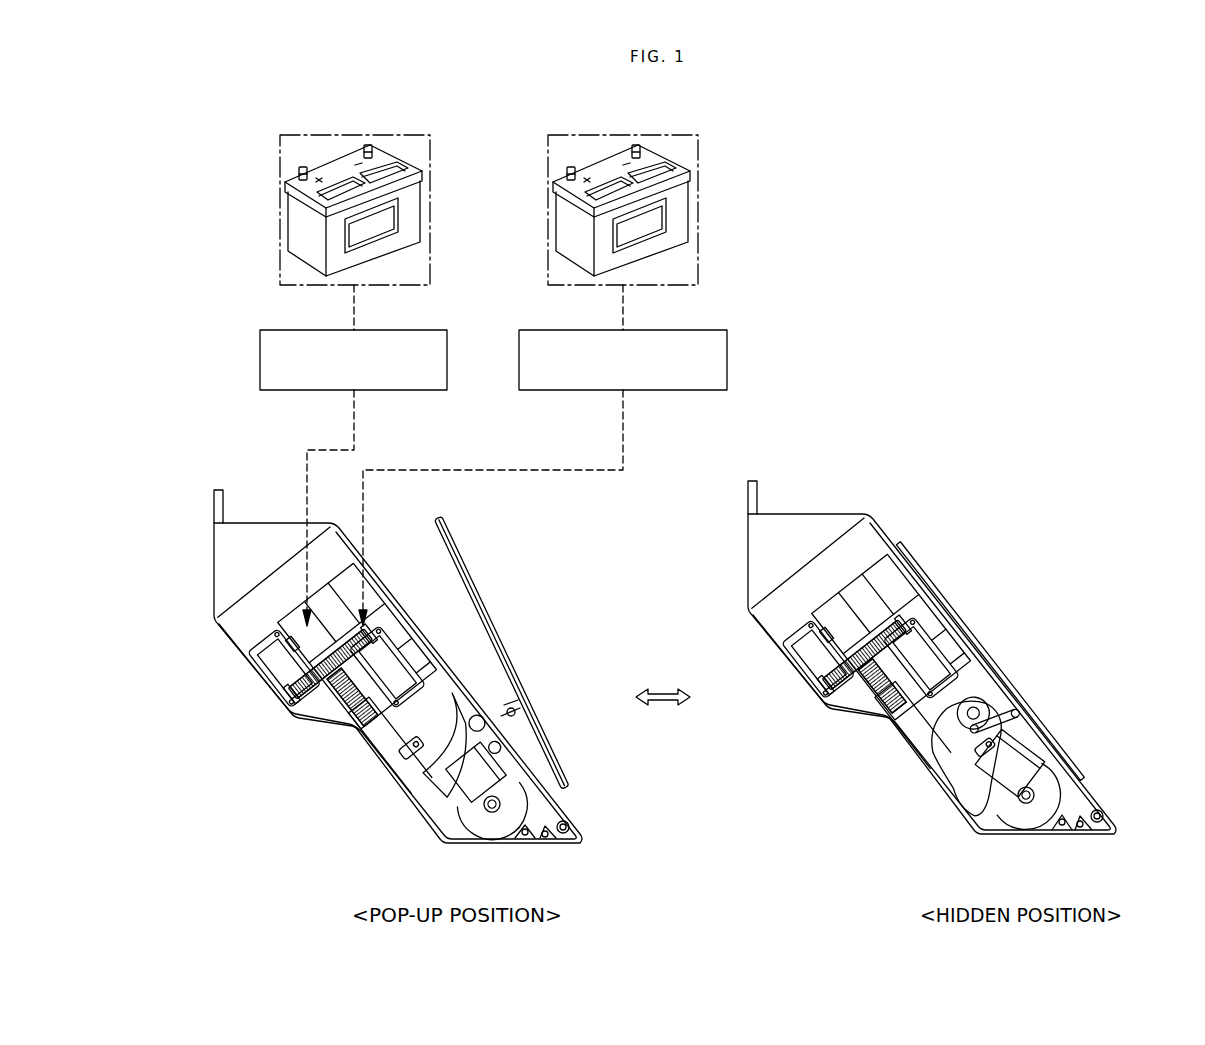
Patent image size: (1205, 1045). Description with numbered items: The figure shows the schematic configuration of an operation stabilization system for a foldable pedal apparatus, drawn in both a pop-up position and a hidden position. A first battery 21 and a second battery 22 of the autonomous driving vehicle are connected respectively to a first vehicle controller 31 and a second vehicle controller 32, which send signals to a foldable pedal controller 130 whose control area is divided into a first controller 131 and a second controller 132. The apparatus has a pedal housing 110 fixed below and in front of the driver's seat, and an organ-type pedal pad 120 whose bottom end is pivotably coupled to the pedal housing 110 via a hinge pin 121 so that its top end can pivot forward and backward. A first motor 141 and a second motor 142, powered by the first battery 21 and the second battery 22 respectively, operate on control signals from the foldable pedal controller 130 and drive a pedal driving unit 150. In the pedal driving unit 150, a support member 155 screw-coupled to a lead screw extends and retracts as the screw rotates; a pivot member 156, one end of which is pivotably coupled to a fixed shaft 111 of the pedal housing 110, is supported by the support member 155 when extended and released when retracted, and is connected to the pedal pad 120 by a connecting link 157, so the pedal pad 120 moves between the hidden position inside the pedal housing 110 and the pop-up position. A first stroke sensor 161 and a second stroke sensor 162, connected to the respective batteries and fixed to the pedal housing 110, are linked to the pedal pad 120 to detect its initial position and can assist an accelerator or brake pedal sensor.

The first battery 21 is at (280, 212).
The second battery 22 is at (698, 209).
The first vehicle controller 31 is at (260, 357).
The second vehicle controller 32 is at (727, 357).
The pedal housing 110 is at (222, 566).
The fixed shaft 111 is at (492, 810).
The pedal pad 120 is at (462, 604).
The hinge pin 121 is at (568, 827).
The foldable pedal controller 130 is at (372, 588).
The first controller 131 is at (285, 645).
The second controller 132 is at (420, 592).
The first motor 141 is at (272, 660).
The second motor 142 is at (400, 655).
The pedal driving unit 150 is at (338, 707).
The support member 155 is at (383, 747).
The pivot member 156 is at (450, 800).
The connecting link 157 is at (512, 690).
The first stroke sensor 161 is at (490, 770).
The second stroke sensor 162 is at (440, 760).